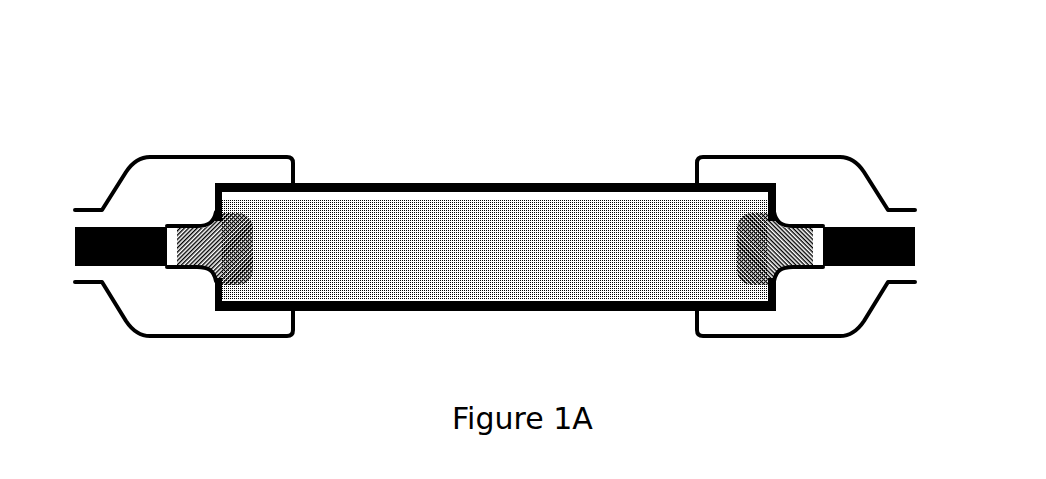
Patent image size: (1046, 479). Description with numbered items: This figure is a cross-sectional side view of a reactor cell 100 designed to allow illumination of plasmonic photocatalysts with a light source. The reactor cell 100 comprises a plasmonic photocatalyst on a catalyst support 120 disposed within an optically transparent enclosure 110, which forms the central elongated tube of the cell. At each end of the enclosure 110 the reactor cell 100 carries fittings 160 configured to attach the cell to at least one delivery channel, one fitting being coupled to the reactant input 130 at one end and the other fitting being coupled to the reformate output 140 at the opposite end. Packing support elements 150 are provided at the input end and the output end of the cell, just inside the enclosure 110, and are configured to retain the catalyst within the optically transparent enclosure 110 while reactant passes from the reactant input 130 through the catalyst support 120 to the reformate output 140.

The reactor cell 100 is at (177, 117).
The optically transparent enclosure 110 is at (373, 184).
The catalyst support 120 is at (383, 278).
The reactant input 130 is at (68, 247).
The reformate output 140 is at (923, 243).
The packing support element 150 is at (253, 252).
The fitting 160 is at (227, 152).